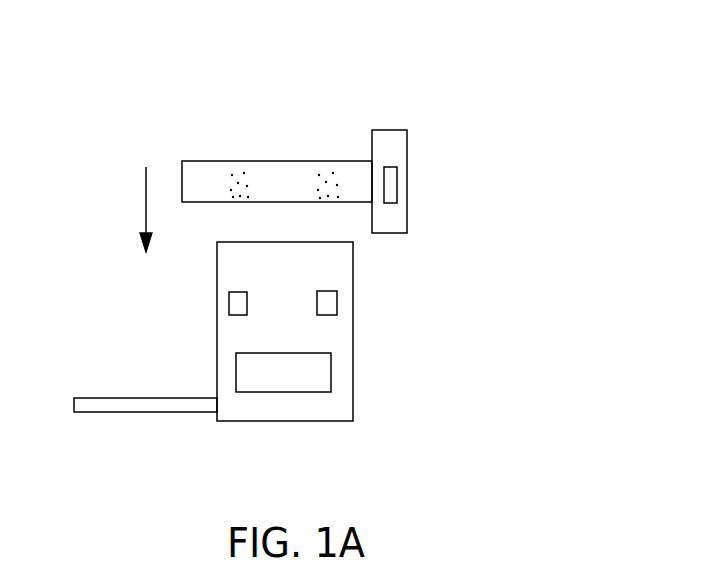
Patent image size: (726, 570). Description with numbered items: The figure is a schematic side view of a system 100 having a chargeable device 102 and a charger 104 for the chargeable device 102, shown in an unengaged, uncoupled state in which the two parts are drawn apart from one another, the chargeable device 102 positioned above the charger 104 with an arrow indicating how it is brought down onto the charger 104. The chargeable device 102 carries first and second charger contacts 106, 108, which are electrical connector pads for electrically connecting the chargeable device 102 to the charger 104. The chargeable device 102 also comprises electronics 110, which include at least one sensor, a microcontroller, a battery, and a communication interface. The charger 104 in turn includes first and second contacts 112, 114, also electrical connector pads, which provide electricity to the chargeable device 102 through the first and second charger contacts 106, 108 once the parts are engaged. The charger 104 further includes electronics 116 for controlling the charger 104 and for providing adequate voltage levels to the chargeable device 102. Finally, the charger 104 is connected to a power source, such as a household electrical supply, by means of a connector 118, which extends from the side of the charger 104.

The system 100 is at (443, 61).
The chargeable device 102 is at (195, 173).
The charger 104 is at (332, 403).
The first charger contact 106 is at (235, 188).
The second charger contact 108 is at (328, 177).
The electronics 110 is at (392, 185).
The first contact 112 is at (237, 301).
The second contact 114 is at (330, 303).
The electronics 116 is at (327, 373).
The connector 118 is at (168, 397).